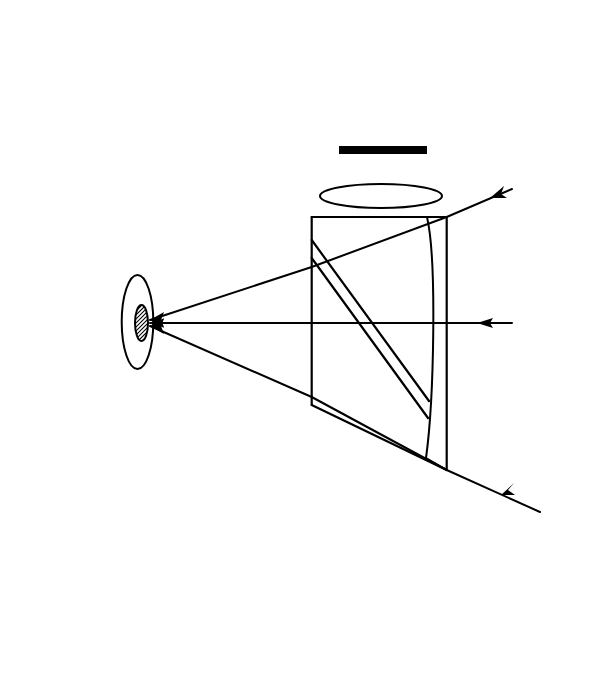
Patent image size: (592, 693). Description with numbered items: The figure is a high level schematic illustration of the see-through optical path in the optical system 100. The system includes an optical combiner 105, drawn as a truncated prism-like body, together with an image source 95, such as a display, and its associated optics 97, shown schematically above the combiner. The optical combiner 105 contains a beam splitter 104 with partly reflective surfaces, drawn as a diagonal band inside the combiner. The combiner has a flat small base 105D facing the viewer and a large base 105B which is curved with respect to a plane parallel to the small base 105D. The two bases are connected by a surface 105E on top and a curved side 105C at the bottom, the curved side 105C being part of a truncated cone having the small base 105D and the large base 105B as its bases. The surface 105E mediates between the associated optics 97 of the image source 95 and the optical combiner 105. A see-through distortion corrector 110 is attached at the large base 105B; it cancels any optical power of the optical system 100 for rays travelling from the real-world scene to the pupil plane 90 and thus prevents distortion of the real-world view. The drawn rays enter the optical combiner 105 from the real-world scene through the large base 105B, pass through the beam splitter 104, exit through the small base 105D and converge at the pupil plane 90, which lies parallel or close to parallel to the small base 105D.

The optical system 100 is at (258, 54).
The pupil plane 90 is at (148, 286).
The image source 95 is at (374, 146).
The associated optics 97 is at (430, 189).
The beam splitter 104 is at (397, 377).
The optical combiner 105 is at (370, 374).
The large base 105B is at (433, 357).
The curved side 105C is at (336, 432).
The small base 105D is at (296, 369).
The surface 105E is at (316, 210).
The see-through distortion corrector 110 is at (448, 443).